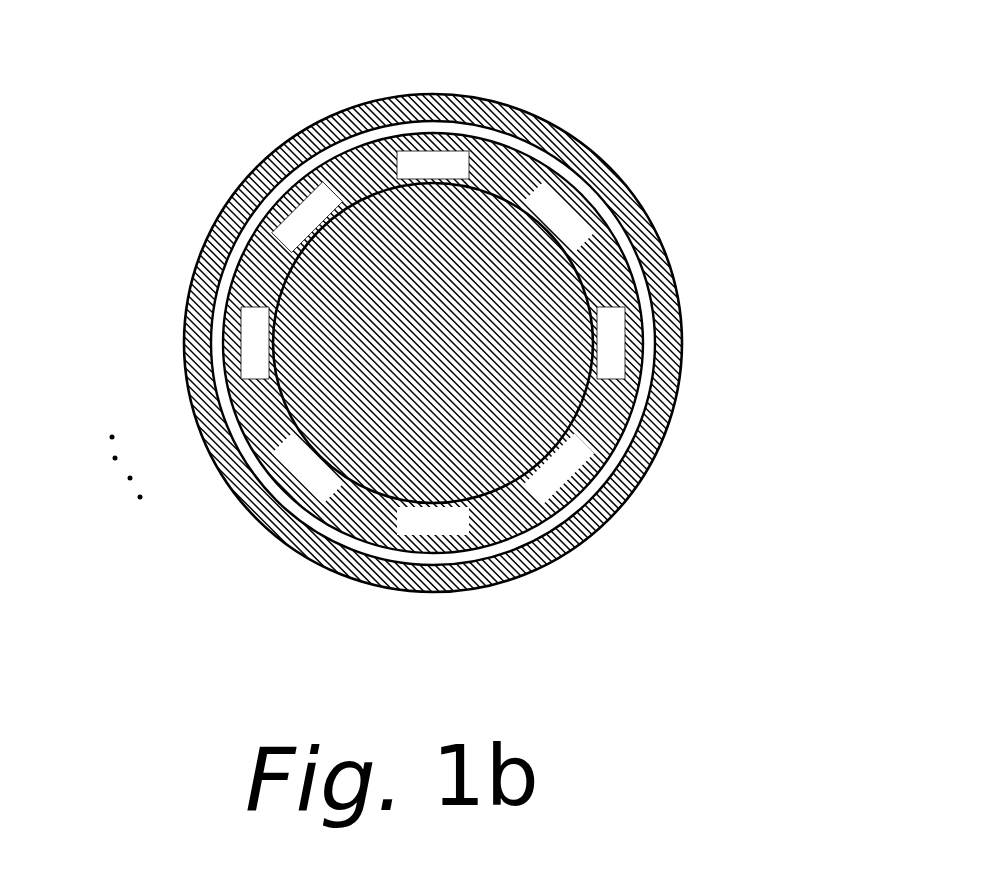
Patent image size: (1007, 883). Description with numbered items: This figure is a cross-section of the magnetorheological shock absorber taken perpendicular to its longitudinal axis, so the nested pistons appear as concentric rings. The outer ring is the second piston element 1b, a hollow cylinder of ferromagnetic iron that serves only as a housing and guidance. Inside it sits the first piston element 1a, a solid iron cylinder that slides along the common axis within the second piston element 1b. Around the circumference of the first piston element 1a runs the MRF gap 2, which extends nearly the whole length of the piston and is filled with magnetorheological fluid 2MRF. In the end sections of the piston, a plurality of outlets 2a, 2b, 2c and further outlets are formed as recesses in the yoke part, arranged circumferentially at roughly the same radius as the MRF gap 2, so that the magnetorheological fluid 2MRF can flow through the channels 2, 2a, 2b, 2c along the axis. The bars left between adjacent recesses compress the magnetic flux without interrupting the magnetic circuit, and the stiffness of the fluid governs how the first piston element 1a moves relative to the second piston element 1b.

The first piston element 1a is at (523, 328).
The second piston element 1b is at (203, 252).
The MRF gap 2 is at (738, 327).
The magnetorheological fluid 2MRF is at (613, 330).
The outlet 2a is at (428, 165).
The outlet 2b is at (325, 205).
The outlet 2c is at (250, 328).